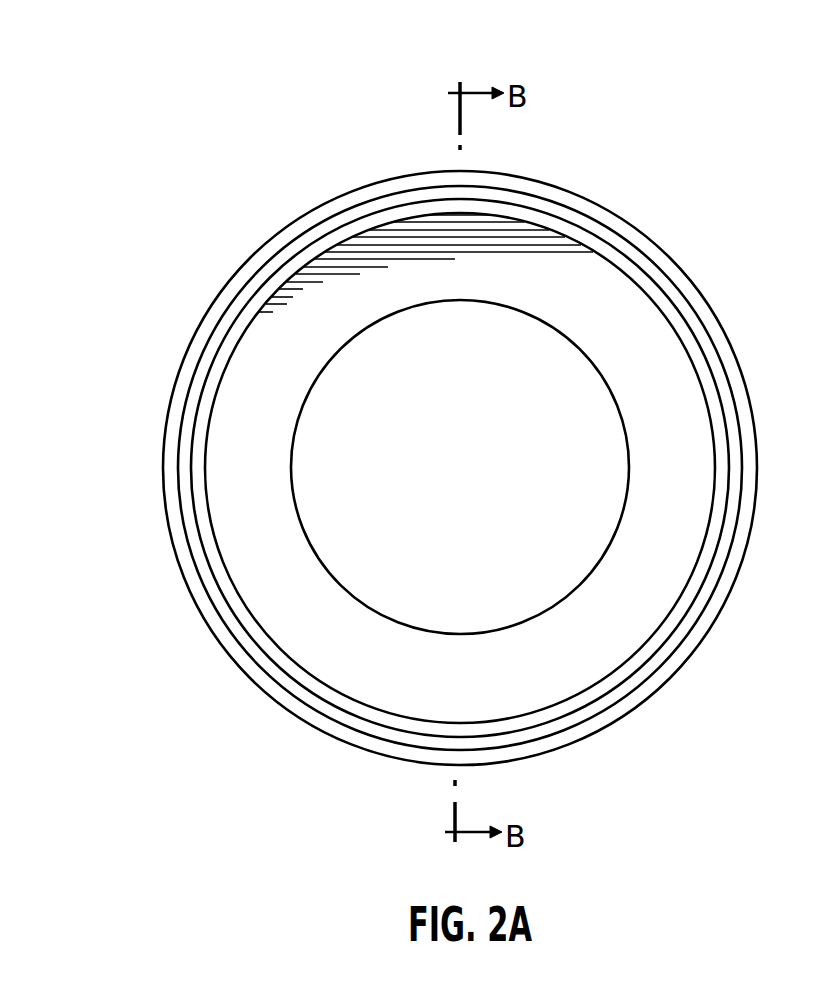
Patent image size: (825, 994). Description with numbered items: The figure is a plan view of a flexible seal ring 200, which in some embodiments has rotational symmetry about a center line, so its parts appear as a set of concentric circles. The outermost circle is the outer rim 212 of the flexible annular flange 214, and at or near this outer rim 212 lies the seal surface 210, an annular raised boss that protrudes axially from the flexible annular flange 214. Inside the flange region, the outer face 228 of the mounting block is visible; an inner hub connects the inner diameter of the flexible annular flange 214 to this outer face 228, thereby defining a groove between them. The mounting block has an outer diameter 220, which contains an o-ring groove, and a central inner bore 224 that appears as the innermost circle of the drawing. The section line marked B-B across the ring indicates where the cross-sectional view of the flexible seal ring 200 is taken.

The flexible seal ring 200 is at (476, 408).
The outer diameter 220 is at (577, 192).
The outer rim 212 is at (607, 225).
The outer face 228 is at (641, 246).
The seal surface 210 is at (672, 308).
The flexible annular flange 214 is at (683, 383).
The inner bore 224 is at (577, 350).